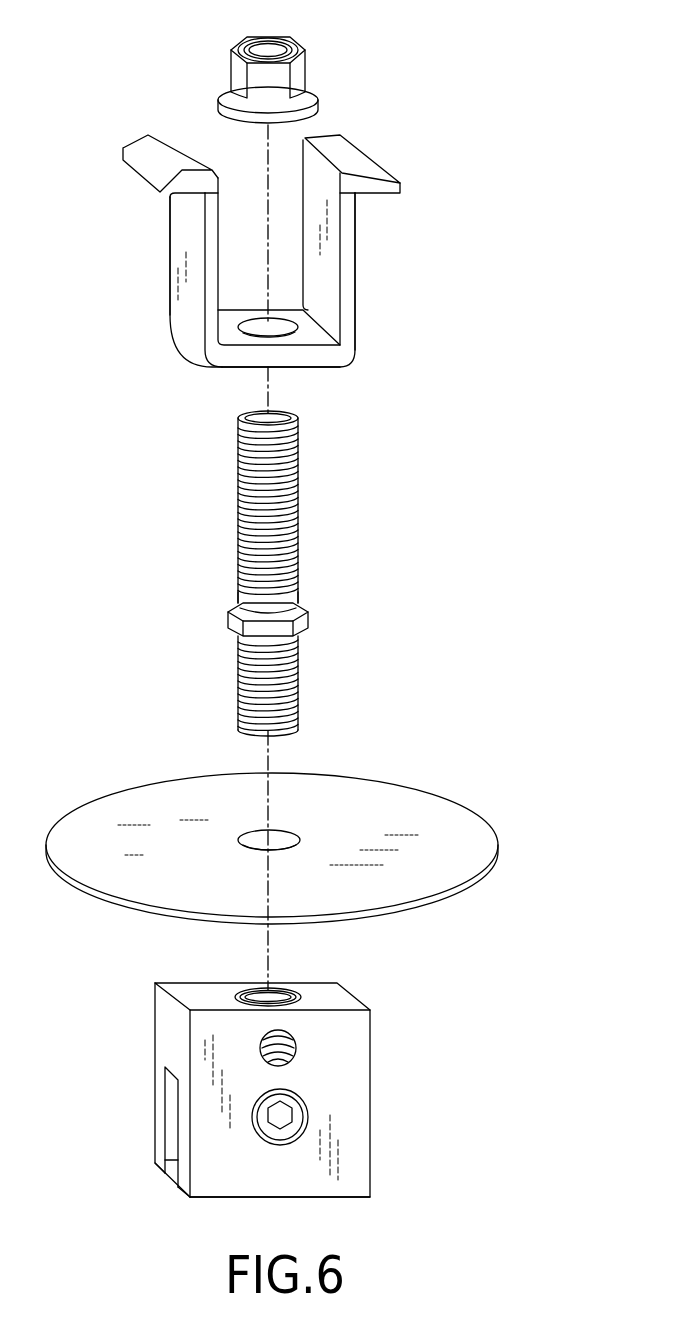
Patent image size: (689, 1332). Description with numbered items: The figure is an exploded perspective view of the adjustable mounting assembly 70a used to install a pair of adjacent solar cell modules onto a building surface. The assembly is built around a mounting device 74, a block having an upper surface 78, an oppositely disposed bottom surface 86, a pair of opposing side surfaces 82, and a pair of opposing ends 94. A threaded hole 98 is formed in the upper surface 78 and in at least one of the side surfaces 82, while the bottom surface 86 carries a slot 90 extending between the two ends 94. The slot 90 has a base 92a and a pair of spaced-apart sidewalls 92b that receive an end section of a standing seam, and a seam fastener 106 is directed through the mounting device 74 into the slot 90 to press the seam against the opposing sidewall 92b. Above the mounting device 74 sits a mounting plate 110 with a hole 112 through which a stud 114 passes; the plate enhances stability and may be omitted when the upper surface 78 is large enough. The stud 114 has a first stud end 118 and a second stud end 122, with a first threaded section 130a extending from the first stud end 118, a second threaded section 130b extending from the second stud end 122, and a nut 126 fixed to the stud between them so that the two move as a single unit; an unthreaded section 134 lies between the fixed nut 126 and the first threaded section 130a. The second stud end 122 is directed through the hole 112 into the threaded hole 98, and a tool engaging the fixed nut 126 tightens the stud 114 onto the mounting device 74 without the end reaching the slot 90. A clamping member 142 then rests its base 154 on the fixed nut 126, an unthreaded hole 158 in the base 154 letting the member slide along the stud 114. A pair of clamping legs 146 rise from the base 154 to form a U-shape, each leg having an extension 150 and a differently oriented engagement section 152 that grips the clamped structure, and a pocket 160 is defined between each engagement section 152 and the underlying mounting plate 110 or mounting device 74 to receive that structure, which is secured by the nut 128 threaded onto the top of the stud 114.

The mounting assembly 70a is at (527, 98).
The nut 128 is at (308, 68).
The clamping member 142 is at (450, 200).
The clamping legs 146 is at (190, 145).
The engagement section 152 is at (177, 195).
The extension 150 is at (182, 237).
The pocket 160 is at (153, 310).
The base 154 is at (240, 337).
The hole 158 is at (325, 345).
The stud 114 is at (238, 500).
The first stud end 118 is at (283, 417).
The first threaded section 130a is at (326, 425).
The unthreaded section 134 is at (238, 588).
The nut 126 is at (308, 618).
The second threaded section 130b is at (230, 628).
The second stud end 122 is at (272, 731).
The hole 112 is at (296, 832).
The mounting plate 110 is at (480, 824).
The mounting device 74 is at (337, 1000).
The upper surface 78 is at (177, 988).
The ends 94 is at (163, 1013).
The threaded hole 98 is at (328, 998).
The base 92a is at (163, 1066).
The sidewalls 92b is at (172, 1118).
The side surfaces 82 is at (355, 1088).
The slot 90 is at (132, 1186).
The seam fastener 106 is at (278, 1123).
The bottom surface 86 is at (342, 1197).